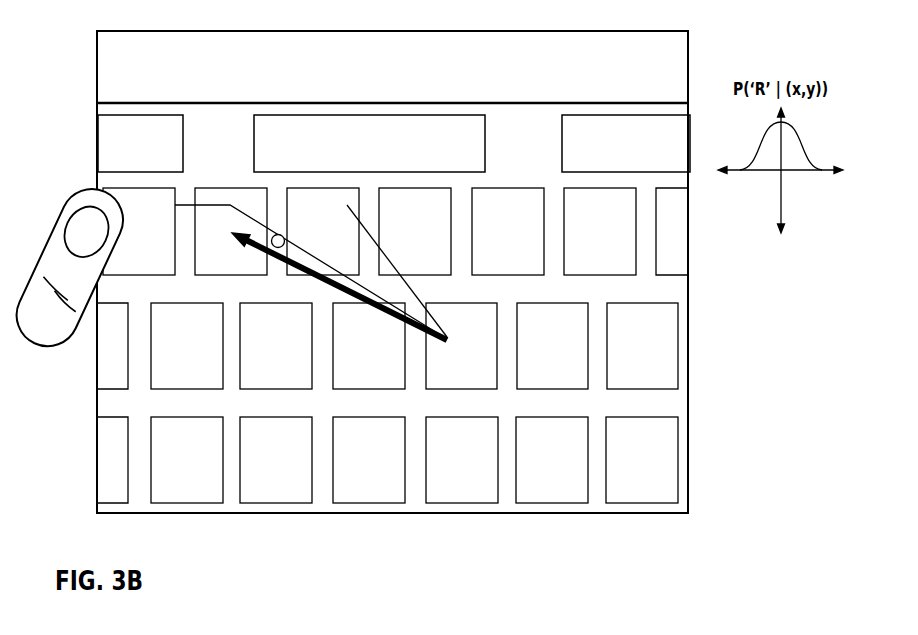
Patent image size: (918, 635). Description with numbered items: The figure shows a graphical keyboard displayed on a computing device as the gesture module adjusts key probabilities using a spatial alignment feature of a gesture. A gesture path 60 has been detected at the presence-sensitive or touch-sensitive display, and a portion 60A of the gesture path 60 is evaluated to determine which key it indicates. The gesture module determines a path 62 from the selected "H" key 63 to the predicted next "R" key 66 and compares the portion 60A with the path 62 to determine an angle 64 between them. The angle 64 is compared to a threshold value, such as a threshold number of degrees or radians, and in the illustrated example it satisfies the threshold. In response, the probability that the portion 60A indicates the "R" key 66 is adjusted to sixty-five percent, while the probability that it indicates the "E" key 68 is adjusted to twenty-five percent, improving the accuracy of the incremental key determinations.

The gesture path 60 is at (178, 196).
The portion of gesture path 60A is at (270, 225).
The path 62 is at (320, 288).
The "H" key 63 is at (458, 398).
The angle 64 is at (264, 232).
The "R" key 66 is at (230, 283).
The "E" key 68 is at (157, 283).